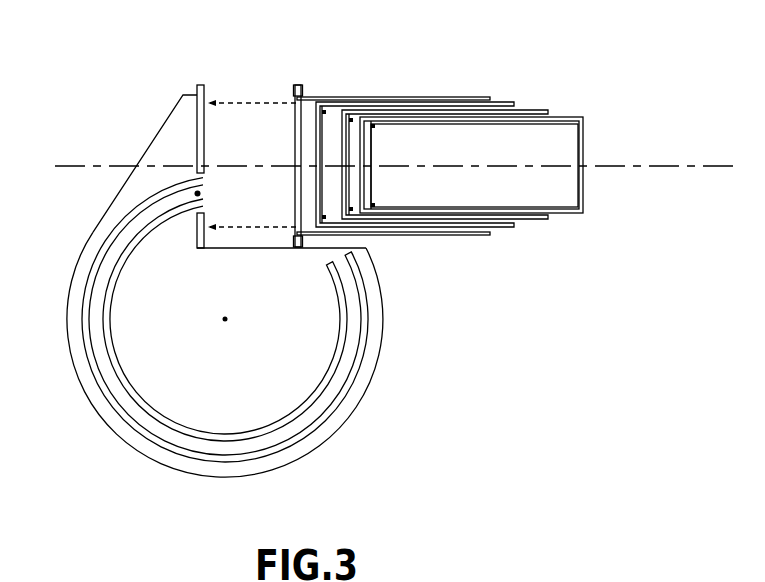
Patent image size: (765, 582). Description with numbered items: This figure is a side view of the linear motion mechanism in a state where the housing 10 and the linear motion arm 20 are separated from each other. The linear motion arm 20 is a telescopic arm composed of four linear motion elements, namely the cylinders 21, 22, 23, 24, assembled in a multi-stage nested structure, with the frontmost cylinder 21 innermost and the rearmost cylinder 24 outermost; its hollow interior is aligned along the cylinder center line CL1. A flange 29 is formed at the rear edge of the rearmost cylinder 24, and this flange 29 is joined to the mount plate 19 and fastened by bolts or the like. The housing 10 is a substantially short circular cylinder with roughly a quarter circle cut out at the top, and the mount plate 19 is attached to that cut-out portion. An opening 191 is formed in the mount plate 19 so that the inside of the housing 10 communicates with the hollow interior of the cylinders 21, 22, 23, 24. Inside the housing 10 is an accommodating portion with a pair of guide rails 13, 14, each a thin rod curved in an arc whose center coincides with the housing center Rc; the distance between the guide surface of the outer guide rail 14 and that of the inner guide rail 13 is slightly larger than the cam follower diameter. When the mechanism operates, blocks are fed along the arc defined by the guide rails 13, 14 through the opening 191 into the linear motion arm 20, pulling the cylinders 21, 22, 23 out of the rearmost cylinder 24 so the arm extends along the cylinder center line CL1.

The housing 10 is at (376, 395).
The inner guide rail 13 is at (345, 333).
The outer guide rail 14 is at (363, 297).
The mount plate 19 is at (200, 84).
The opening 191 is at (194, 194).
The linear motion arm 20 is at (572, 80).
The frontmost cylinder 21 is at (564, 117).
The cylinder 22 is at (533, 110).
The cylinder 23 is at (503, 102).
The rearmost cylinder 24 is at (450, 96).
The flange 29 is at (298, 83).
The cylinder center line CL1 is at (688, 165).
The housing center Rc is at (229, 307).